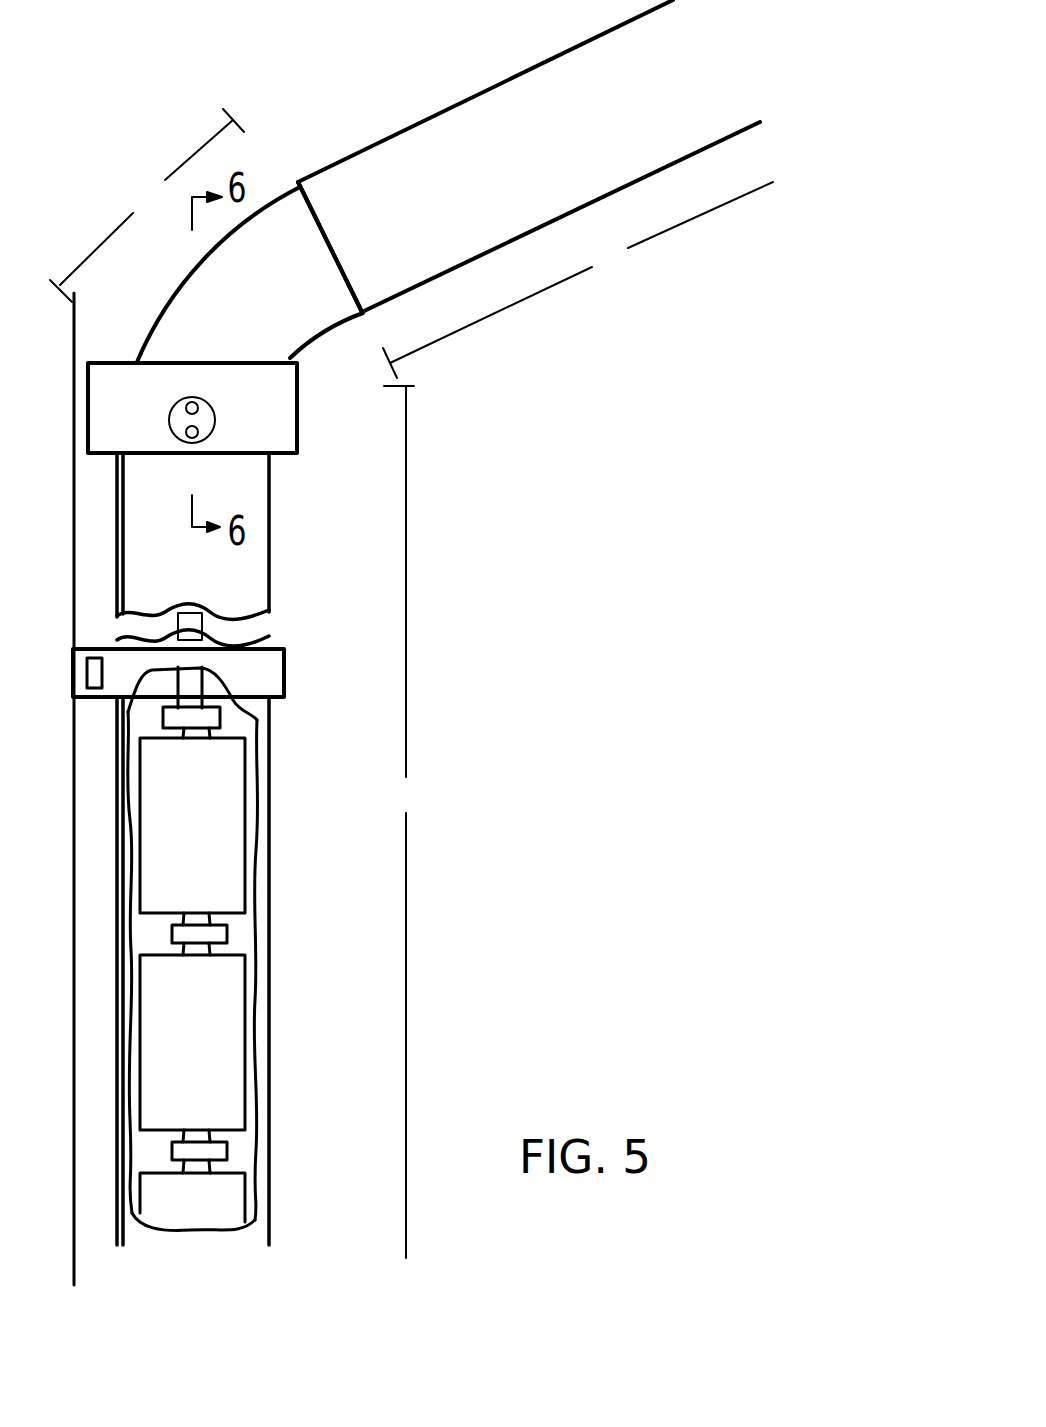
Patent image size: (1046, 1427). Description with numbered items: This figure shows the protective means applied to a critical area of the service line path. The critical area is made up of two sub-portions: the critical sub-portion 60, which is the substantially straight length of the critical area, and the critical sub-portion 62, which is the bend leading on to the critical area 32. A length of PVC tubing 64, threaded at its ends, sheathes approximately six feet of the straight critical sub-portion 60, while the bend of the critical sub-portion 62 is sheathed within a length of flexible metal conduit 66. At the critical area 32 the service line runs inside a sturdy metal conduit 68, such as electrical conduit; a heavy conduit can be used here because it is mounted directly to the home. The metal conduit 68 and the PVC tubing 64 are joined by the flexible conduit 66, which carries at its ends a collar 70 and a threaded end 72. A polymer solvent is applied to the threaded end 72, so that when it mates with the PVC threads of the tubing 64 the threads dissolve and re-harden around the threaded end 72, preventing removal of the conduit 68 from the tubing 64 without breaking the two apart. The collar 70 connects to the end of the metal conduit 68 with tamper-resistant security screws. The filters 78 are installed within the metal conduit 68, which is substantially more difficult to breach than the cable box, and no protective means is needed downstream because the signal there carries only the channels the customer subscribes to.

The critical area 32 is at (402, 822).
The critical sub-portion 60 is at (578, 280).
The critical sub-portion 62 is at (147, 205).
The PVC tubing 64 is at (417, 122).
The flexible metal conduit 66 is at (187, 280).
The metal conduit 68 is at (269, 558).
The collar 70 is at (273, 438).
The threaded end 72 is at (283, 198).
The filters 78 is at (174, 834).